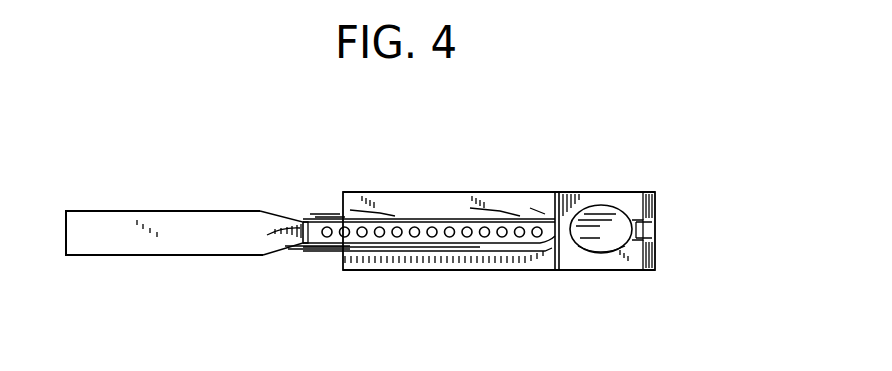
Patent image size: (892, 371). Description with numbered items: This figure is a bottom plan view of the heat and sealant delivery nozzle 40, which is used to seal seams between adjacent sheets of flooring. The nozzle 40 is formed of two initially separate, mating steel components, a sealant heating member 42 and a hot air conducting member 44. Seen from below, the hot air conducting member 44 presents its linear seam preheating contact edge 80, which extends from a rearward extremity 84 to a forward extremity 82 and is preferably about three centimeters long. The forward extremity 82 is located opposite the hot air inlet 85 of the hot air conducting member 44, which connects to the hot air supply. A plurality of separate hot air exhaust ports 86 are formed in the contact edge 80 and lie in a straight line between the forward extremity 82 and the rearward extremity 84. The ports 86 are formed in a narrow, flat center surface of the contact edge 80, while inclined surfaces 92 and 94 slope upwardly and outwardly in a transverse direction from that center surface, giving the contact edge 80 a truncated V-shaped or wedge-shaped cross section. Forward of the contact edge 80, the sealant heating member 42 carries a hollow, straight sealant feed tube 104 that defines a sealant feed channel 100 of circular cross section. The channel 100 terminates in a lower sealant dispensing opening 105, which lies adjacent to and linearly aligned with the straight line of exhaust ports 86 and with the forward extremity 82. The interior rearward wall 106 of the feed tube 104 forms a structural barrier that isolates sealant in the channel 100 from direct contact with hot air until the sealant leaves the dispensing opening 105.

The heat and sealant delivery nozzle 40 is at (222, 152).
The sealant heating member 42 is at (537, 192).
The hot air conducting member 44 is at (152, 263).
The seam preheating contact edge 80 is at (322, 212).
The forward extremity 82 is at (565, 225).
The rearward extremity 84 is at (267, 235).
The hot air inlet 85 is at (72, 226).
The hot air exhaust ports 86 is at (397, 227).
The inclined surface 92 is at (422, 212).
The inclined surface 94 is at (522, 250).
The sealant feed channel 100 is at (607, 220).
The sealant feed tube 104 is at (607, 192).
The sealant dispensing opening 105 is at (605, 248).
The interior rearward wall 106 is at (460, 265).